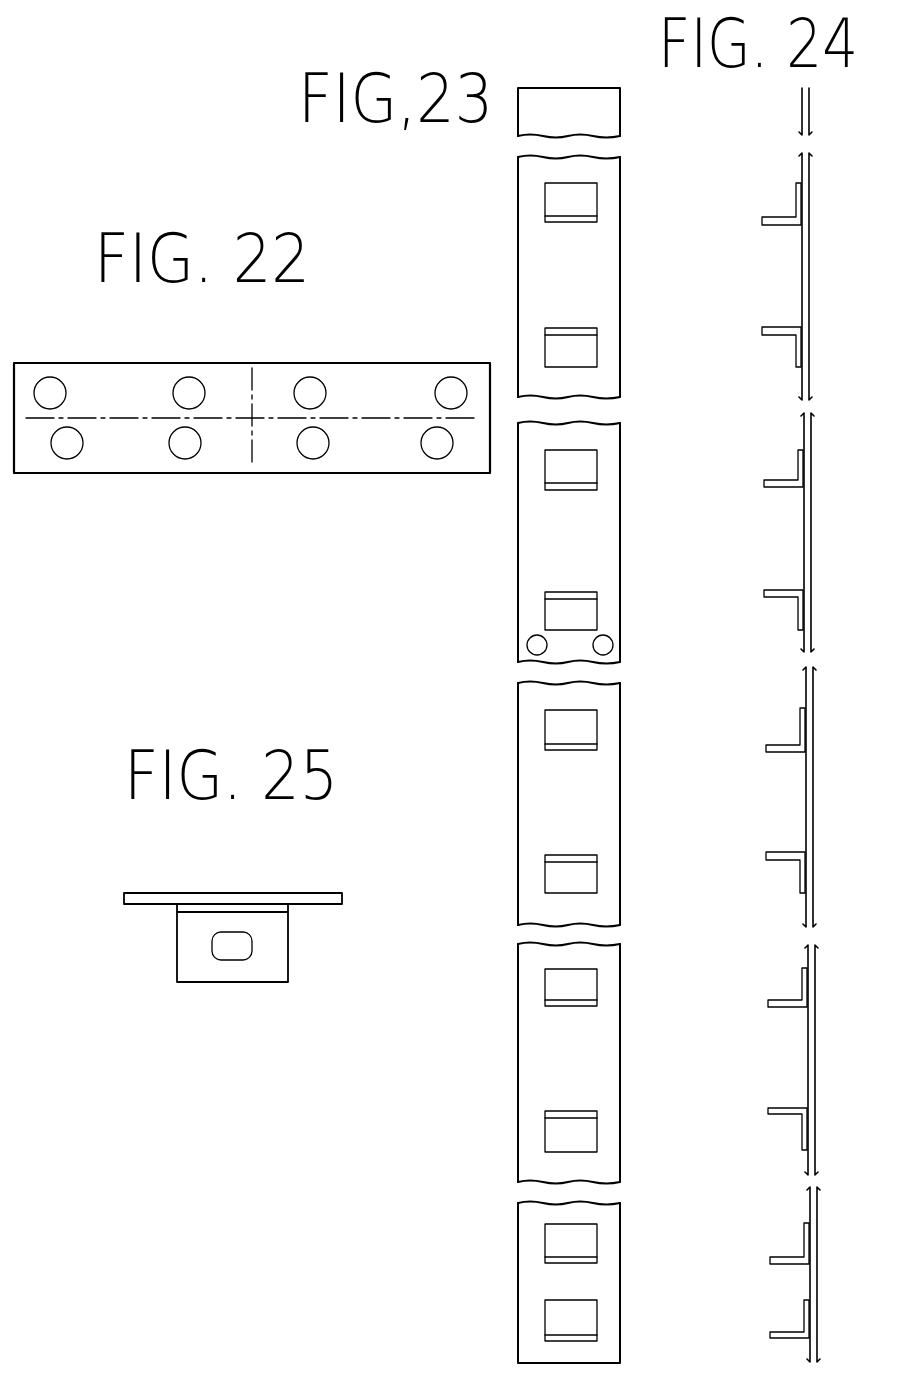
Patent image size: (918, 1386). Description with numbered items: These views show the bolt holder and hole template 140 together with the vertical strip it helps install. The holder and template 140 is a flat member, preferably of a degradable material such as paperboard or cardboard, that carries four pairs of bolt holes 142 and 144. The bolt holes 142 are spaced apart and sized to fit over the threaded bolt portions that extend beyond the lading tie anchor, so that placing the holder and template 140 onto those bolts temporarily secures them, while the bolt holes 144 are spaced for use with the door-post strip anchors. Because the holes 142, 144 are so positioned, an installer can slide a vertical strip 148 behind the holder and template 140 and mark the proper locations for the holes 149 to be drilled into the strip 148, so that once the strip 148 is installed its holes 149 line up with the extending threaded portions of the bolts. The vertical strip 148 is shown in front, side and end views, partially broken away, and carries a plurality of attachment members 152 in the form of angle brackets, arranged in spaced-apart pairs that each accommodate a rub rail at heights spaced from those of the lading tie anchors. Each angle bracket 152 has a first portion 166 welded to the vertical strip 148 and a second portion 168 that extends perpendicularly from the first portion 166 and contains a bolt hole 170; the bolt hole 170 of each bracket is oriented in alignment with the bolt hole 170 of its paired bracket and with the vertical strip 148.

In FIG. 22, the bolt holder and hole template 140 is at (412, 388).
In FIG. 22, the bolt holes 142 is at (165, 435).
In FIG. 22, the bolt holes 144 is at (66, 390).
In FIG. 24, the vertical strip 148 is at (810, 1063).
In FIG. 25, the vertical strip 148 is at (303, 893).
In FIG. 23, the holes 149 is at (610, 253).
In FIG. 23, the attachment members 152 is at (548, 197).
In FIG. 24, the attachment members 152 is at (800, 462).
In FIG. 23, the first portion 166 is at (558, 1129).
In FIG. 24, the second portion 168 is at (800, 747).
In FIG. 25, the bolt hole 170 is at (240, 947).